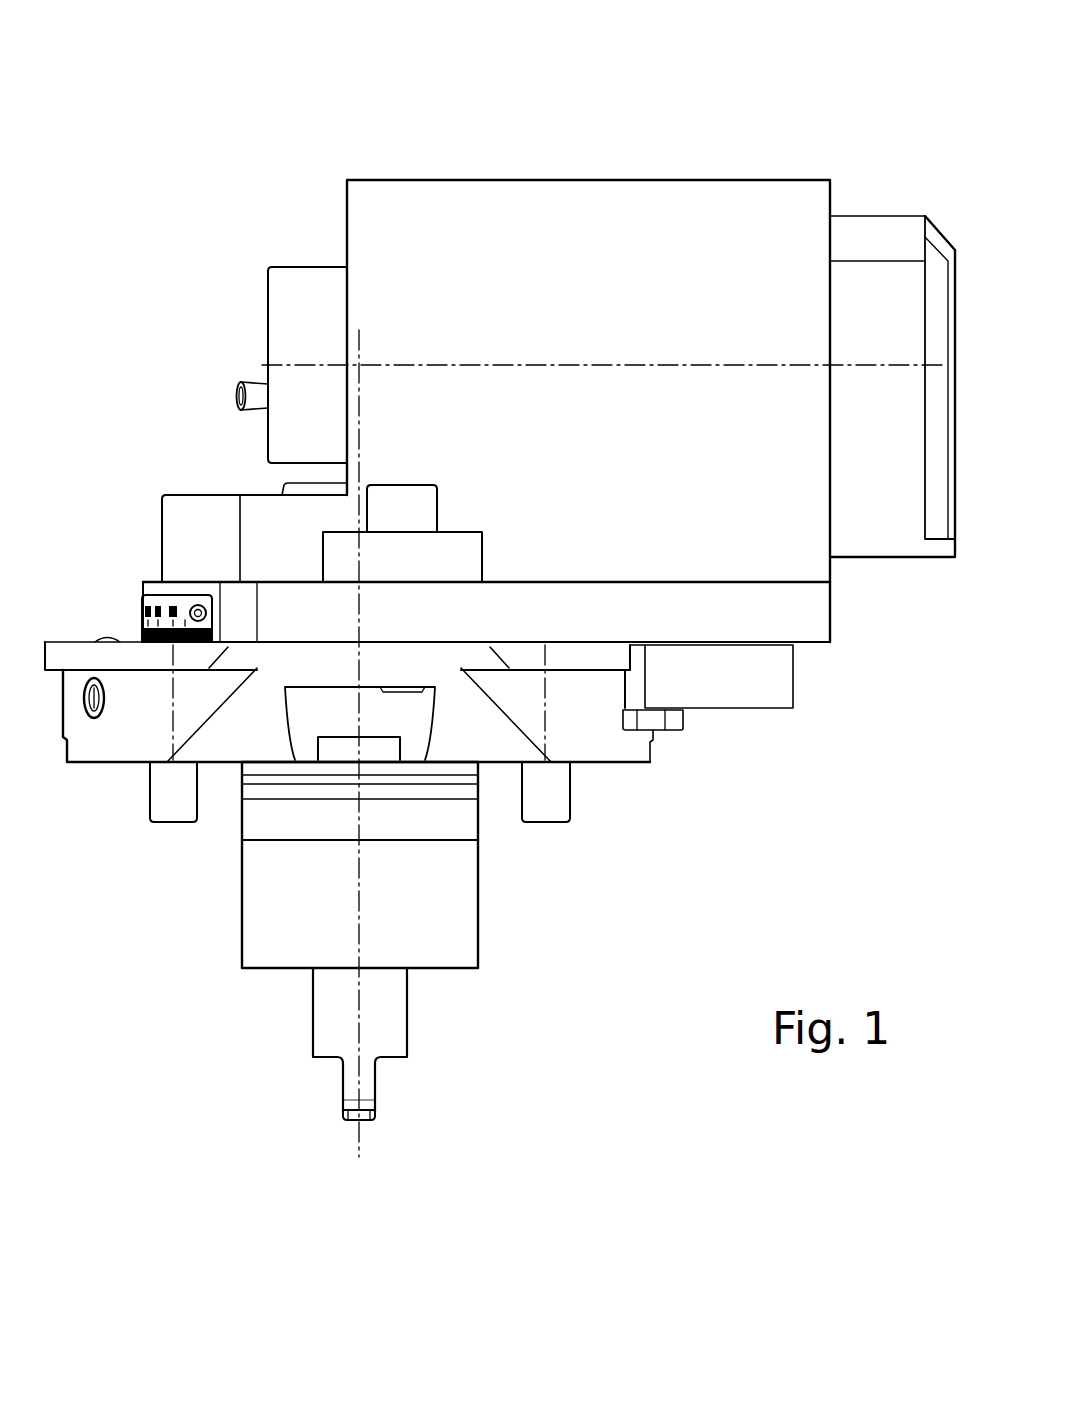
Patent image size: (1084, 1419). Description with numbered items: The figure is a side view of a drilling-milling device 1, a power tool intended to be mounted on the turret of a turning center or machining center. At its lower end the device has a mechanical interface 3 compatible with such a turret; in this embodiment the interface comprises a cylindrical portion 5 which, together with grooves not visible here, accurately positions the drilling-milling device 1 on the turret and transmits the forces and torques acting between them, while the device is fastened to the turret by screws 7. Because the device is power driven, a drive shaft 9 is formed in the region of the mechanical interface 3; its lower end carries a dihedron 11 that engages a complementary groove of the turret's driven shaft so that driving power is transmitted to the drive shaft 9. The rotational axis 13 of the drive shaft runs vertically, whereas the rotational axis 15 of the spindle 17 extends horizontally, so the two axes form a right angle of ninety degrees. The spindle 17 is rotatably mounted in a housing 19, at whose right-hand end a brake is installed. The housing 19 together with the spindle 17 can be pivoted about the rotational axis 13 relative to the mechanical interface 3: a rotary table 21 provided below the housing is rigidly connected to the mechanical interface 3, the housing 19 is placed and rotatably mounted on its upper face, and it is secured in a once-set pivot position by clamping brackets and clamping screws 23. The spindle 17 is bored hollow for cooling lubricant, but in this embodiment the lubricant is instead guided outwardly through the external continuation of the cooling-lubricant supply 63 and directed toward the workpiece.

The drilling-milling device 1 is at (848, 127).
The mechanical interface 3 is at (303, 1124).
The cylindrical portion 5 is at (478, 922).
The screws 7 is at (180, 825).
The drive shaft 9 is at (312, 1017).
The dihedron 11 is at (377, 1095).
The rotational axis of the drive shaft 13 is at (363, 1028).
The rotational axis of the spindle 15 is at (860, 365).
The spindle 17 is at (307, 285).
The housing 19 is at (628, 240).
The rotary table 21 is at (117, 723).
The clamping brackets and clamping screws 23 is at (437, 497).
The external continuation of the cooling-lubricant supply 63 is at (250, 382).